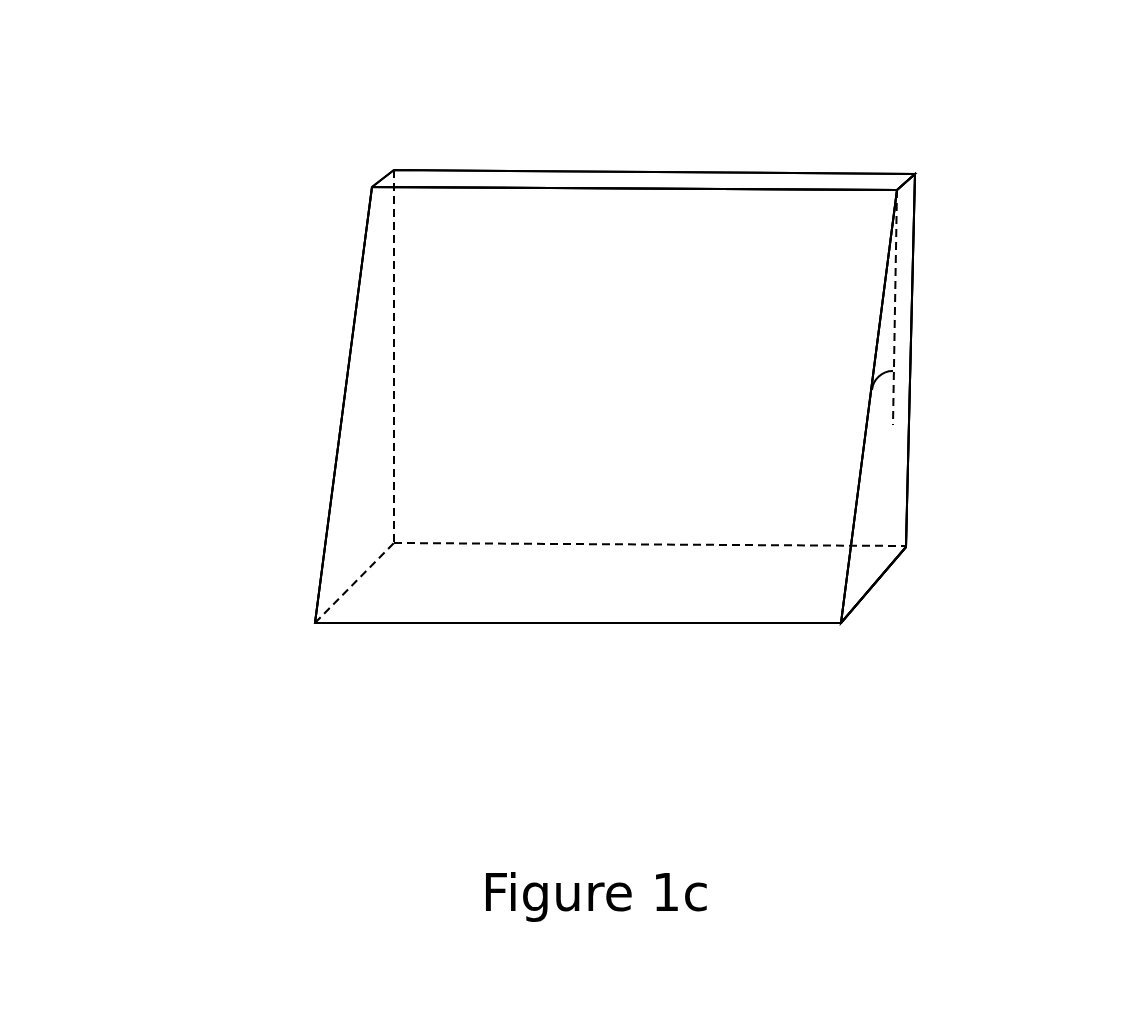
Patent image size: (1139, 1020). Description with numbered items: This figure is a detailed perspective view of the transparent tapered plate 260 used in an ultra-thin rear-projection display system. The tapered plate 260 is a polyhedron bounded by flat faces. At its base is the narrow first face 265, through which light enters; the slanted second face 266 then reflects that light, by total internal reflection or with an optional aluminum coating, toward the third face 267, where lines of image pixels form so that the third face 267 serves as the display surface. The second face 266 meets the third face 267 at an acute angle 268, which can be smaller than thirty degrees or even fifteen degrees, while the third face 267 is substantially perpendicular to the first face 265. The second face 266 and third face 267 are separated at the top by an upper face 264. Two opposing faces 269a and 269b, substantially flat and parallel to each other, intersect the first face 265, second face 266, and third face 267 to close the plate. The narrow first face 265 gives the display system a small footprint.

The tapered plate 260 is at (813, 170).
The upper face 264 is at (528, 180).
The first face 265 is at (868, 597).
The second face 266 is at (473, 390).
The third face 267 is at (920, 308).
The angle 268 is at (882, 393).
The opposing face 269a is at (333, 505).
The opposing face 269b is at (868, 510).